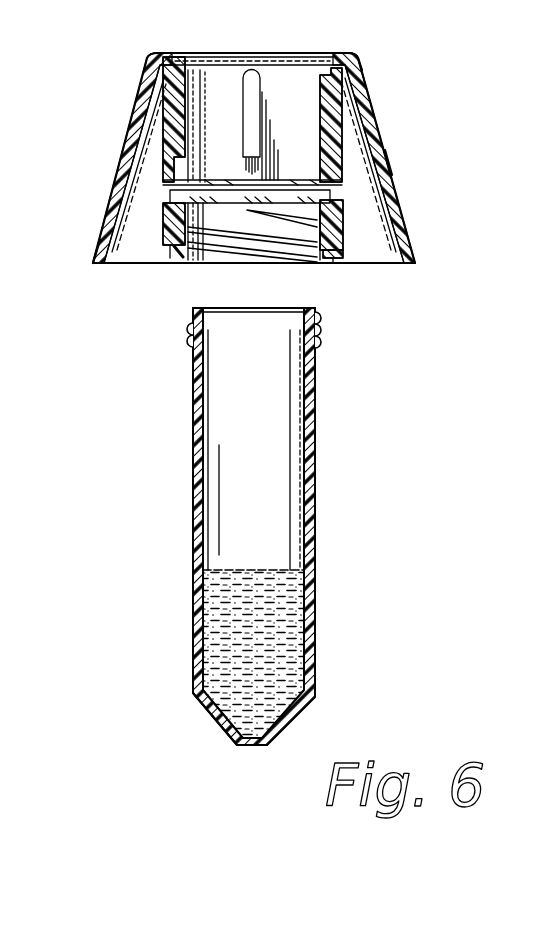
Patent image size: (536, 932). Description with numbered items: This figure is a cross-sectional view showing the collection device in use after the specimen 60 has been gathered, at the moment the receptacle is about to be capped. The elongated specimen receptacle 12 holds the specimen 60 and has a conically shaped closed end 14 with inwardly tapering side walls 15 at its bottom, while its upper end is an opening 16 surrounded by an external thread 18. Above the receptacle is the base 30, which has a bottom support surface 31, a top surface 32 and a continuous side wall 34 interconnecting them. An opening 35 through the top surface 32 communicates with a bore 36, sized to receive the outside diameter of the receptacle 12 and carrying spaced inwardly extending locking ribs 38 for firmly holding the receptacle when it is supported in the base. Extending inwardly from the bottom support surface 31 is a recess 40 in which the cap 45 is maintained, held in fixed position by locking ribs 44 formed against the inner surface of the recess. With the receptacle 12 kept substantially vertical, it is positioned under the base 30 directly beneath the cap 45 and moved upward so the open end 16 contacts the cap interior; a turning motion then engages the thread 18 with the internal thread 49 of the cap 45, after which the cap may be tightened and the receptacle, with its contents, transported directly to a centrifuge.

The specimen receptacle 12 is at (196, 557).
The closed end 14 is at (257, 746).
The inwardly tapering side walls 15 is at (220, 728).
The opening 16 is at (259, 308).
The external thread 18 is at (190, 352).
The base 30 is at (400, 195).
The bottom support surface 31 is at (93, 263).
The top surface 32 is at (352, 55).
The side walls 34 is at (383, 127).
The opening 35 is at (252, 54).
The bore 36 is at (337, 173).
The locking ribs 38 is at (182, 68).
The recess 40 is at (335, 252).
The locking ribs 44 is at (324, 218).
The cap 45 is at (180, 201).
The internal thread 49 is at (222, 247).
The specimen 60 is at (292, 618).